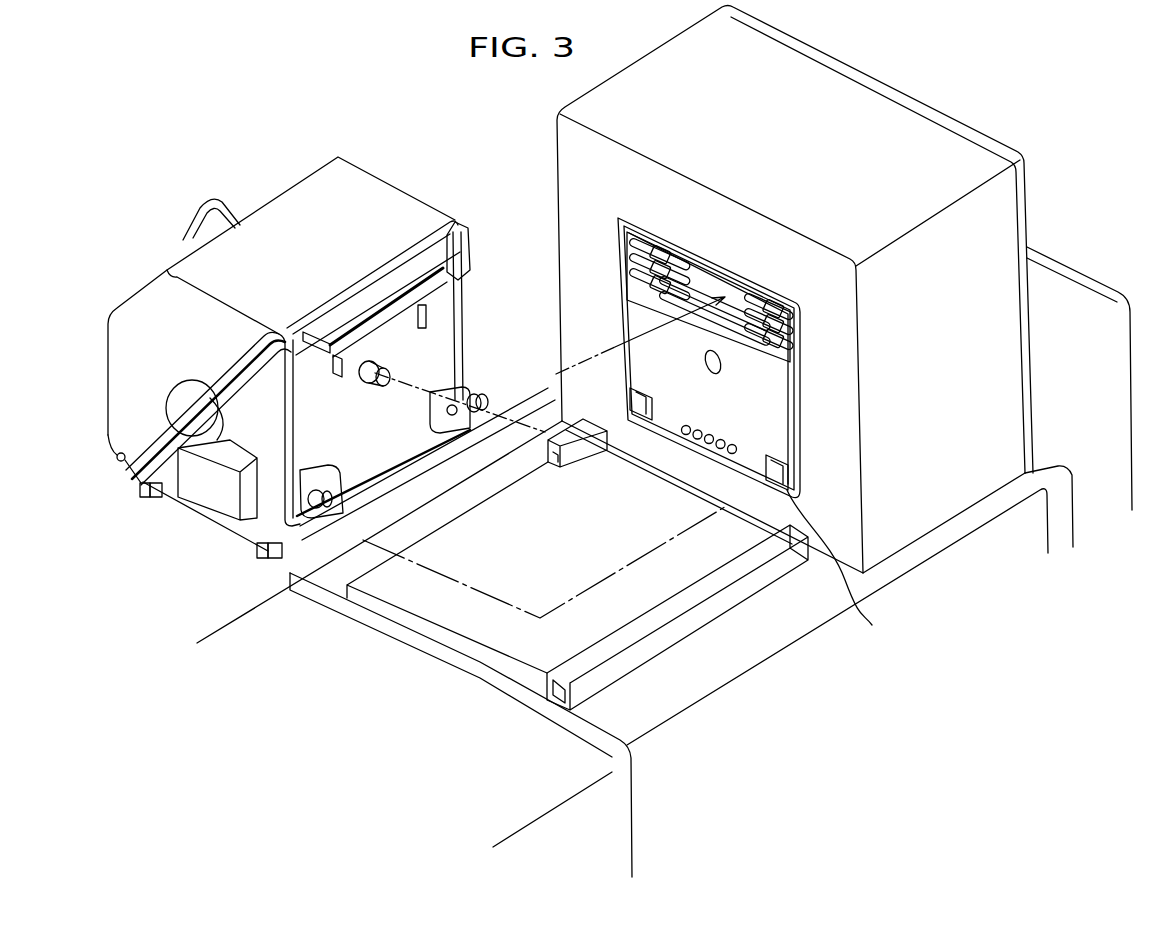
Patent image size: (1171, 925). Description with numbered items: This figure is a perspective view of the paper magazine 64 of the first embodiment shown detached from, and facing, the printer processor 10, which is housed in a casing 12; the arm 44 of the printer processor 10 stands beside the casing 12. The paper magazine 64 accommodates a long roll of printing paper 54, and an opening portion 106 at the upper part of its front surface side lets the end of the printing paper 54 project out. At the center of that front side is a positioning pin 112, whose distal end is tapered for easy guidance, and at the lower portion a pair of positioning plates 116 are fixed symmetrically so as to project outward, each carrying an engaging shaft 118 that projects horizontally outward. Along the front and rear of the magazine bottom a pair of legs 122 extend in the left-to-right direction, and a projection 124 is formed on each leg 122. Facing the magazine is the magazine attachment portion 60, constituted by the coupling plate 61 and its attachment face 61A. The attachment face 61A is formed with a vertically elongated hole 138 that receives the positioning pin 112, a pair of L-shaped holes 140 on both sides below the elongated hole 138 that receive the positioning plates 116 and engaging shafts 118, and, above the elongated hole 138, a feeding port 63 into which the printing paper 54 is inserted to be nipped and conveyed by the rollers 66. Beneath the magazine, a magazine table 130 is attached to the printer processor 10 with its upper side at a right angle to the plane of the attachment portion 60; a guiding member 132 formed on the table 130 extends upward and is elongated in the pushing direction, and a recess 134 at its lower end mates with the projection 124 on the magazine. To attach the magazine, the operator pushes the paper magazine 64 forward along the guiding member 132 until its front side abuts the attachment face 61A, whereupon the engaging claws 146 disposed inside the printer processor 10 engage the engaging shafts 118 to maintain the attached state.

The printer processor 10 is at (972, 108).
The casing 12 is at (843, 120).
The arm 44 is at (1065, 268).
The printing paper 54 is at (447, 283).
The magazine attachment portion 60 is at (804, 420).
The coupling plate 61 is at (802, 445).
The attachment face 61A is at (802, 388).
The feeding port 63 is at (628, 233).
The paper magazine 64 is at (85, 292).
The rollers 66 is at (633, 238).
The opening portion 106 is at (455, 258).
The positioning pin 112 is at (381, 372).
The positioning plates 116 is at (470, 385).
The engaging shaft 118 is at (482, 402).
The legs 122 is at (162, 495).
The projection 124 is at (145, 488).
The magazine table 130 is at (487, 640).
The guiding member 132 is at (623, 640).
The recess 134 is at (557, 690).
The elongated hole 138 is at (722, 370).
The L-shaped holes 140 is at (648, 388).
The engaging claws 146 is at (844, 570).